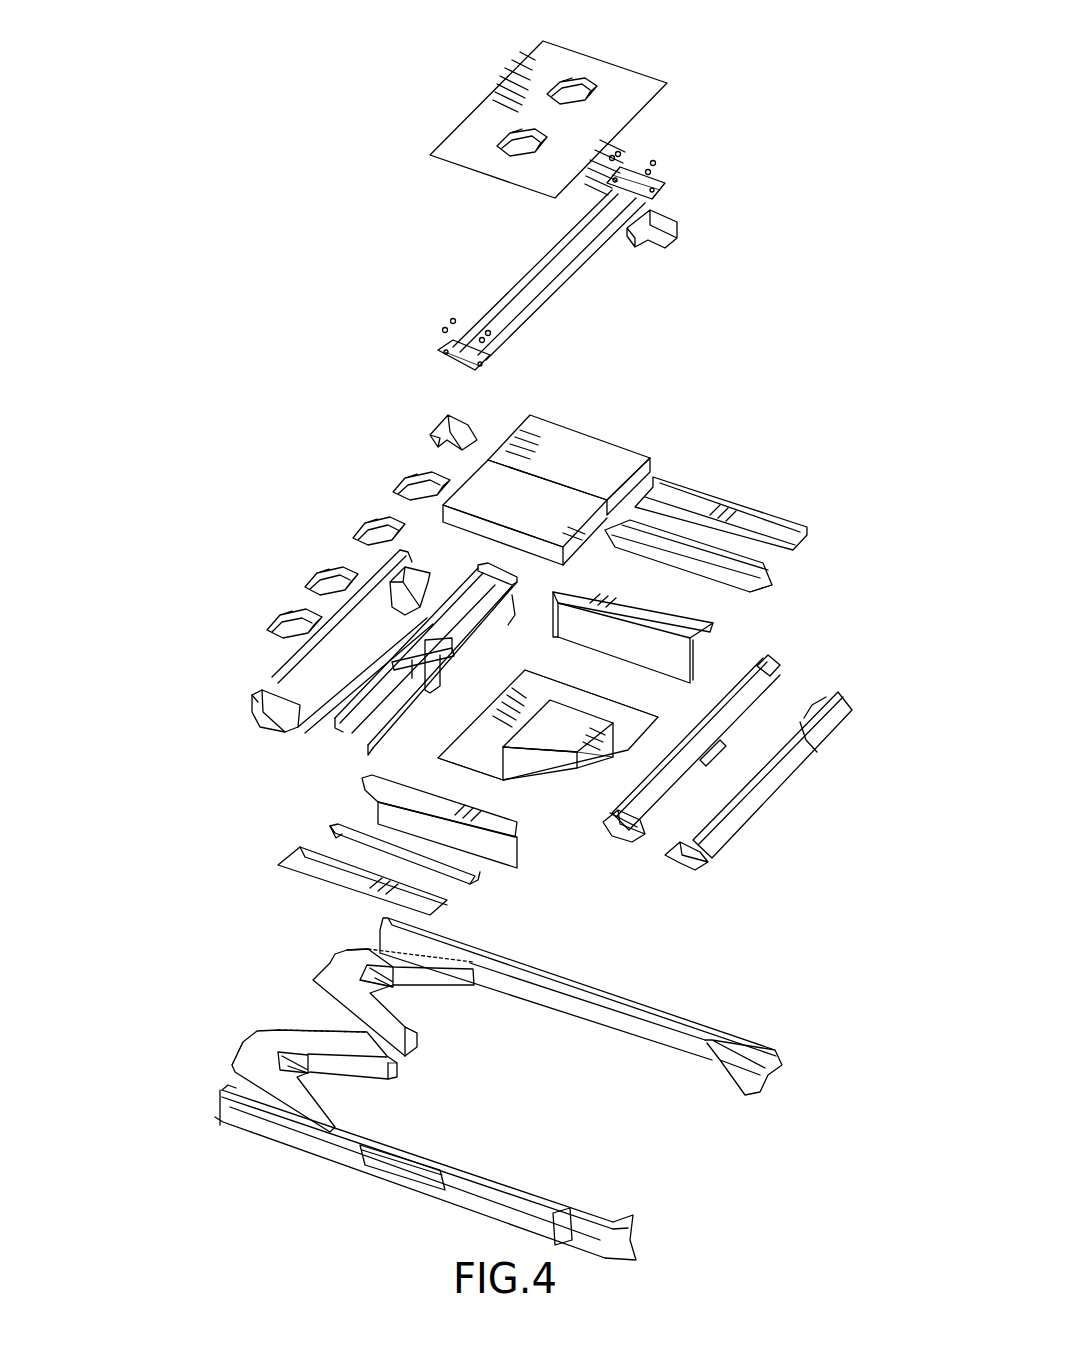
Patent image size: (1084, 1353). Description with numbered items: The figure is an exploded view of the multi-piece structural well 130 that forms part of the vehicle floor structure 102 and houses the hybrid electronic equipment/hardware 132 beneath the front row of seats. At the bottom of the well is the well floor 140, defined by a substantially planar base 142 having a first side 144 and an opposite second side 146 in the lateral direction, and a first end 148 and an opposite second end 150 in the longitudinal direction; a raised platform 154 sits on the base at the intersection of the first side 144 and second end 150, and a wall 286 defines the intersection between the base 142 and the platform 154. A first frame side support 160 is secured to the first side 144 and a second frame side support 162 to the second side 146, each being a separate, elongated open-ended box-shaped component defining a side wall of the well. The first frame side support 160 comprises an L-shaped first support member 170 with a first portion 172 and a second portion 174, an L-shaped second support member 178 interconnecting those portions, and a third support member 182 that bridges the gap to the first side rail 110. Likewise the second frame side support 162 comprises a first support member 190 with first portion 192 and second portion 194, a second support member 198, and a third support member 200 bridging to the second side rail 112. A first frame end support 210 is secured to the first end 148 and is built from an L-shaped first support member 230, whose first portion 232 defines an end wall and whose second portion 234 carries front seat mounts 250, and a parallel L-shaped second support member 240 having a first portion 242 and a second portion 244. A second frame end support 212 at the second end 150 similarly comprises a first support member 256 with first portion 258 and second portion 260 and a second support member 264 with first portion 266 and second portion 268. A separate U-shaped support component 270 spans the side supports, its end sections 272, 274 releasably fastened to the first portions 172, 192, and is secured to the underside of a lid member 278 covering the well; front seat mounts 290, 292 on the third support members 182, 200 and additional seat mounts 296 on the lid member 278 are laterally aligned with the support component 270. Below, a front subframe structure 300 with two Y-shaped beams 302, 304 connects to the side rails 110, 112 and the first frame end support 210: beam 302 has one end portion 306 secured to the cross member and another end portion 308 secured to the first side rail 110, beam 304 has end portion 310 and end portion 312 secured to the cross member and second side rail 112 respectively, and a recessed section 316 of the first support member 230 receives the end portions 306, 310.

The vehicle floor structure 102 is at (212, 505).
The first side rail 110 is at (350, 1178).
The second side rail 112 is at (625, 1027).
The multi-piece well 130 is at (266, 414).
The hybrid electronic equipment/hardware 132 is at (612, 409).
The well floor 140 is at (550, 852).
The base 142 is at (487, 734).
The first side 144 is at (472, 778).
The second side 146 is at (556, 681).
The first end 148 is at (455, 746).
The second end 150 is at (618, 749).
The raised platform 154 is at (562, 787).
The first frame side support 160 is at (532, 883).
The second frame side support 162 is at (828, 556).
The first support member 170 is at (382, 837).
The first portion 172 is at (396, 792).
The second portion 174 is at (470, 870).
The second support member 178 is at (306, 833).
The third support member 182 is at (292, 879).
The first support member 190 is at (689, 648).
The first portion 192 is at (630, 614).
The second portion 194 is at (657, 658).
The second support member 198 is at (785, 583).
The third support member 200 is at (770, 497).
The first frame end support 210 is at (222, 738).
The second frame end support 212 is at (748, 880).
The first support member 230 is at (396, 671).
The first portion 232 is at (515, 614).
The second portion 234 is at (448, 607).
The second support member 240 is at (311, 662).
The first portion 242 is at (272, 671).
The second portion 244 is at (312, 730).
The front seat mounts 250 is at (418, 479).
The first support member 256 is at (854, 690).
The first portion 258 is at (784, 768).
The second portion 260 is at (678, 847).
The second support member 264 is at (612, 872).
The first portion 266 is at (622, 840).
The second portion 268 is at (735, 706).
The support component 270 is at (573, 304).
The end section 272 is at (446, 366).
The end section 274 is at (666, 180).
The lid member 278 is at (476, 107).
The wall 286 is at (508, 759).
The front seat mount 290 is at (458, 426).
The front seat mount 292 is at (660, 224).
The front seat mounts 296 is at (580, 88).
The front subframe structure 300 is at (312, 1054).
The Y-shaped structural beam 302 is at (265, 1098).
The Y-shaped structural beam 304 is at (348, 1009).
The end portion 306 is at (375, 1063).
The end portion 308 is at (268, 1106).
The end portion 310 is at (407, 1030).
The end portion 312 is at (447, 977).
The recessed section 316 is at (455, 663).